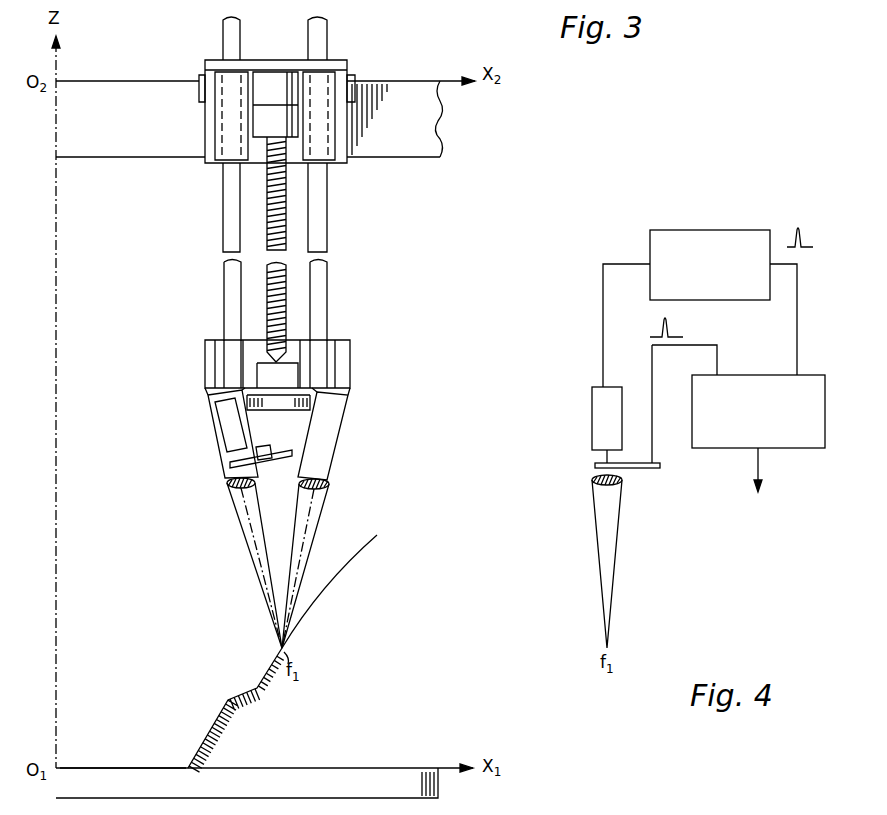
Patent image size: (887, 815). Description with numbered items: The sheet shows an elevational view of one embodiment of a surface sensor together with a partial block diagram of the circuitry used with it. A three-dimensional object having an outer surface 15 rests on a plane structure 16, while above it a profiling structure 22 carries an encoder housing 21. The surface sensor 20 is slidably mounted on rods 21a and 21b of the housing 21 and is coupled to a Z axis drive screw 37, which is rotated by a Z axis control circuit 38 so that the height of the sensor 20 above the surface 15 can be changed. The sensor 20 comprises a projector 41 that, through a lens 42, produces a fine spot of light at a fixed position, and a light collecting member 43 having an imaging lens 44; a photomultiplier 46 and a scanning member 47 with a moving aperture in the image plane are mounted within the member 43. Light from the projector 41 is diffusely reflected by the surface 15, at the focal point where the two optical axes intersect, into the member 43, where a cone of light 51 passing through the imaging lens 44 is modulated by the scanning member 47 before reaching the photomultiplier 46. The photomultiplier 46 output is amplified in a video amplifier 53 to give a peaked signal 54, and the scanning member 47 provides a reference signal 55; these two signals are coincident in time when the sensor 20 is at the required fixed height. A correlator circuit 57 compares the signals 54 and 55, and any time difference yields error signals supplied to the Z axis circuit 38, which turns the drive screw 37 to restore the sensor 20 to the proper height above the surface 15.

In FIG. 3, the outer surface 15 is at (240, 694).
In FIG. 3, the plane structure 16 is at (115, 768).
In FIG. 3, the surface sensor 20 is at (350, 346).
In FIG. 3, the encoder housing 21 is at (340, 60).
In FIG. 3, the rod 21a is at (223, 210).
In FIG. 3, the rod 21b is at (329, 210).
In FIG. 3, the profiling structure 22 is at (159, 69).
In FIG. 3, the Z axis drive screw 37 is at (286, 296).
In FIG. 3, the Z axis control circuit 38 is at (266, 88).
In FIG. 4, the Z axis control circuit 38 is at (761, 507).
In FIG. 3, the projector 41 is at (347, 412).
In FIG. 3, the lens 42 is at (328, 486).
In FIG. 3, the light collecting member 43 is at (208, 398).
In FIG. 3, the imaging lens 44 is at (234, 484).
In FIG. 4, the imaging lens 44 is at (594, 480).
In FIG. 3, the photomultiplier 46 is at (218, 432).
In FIG. 4, the photomultiplier 46 is at (610, 390).
In FIG. 3, the scanning member 47 is at (228, 464).
In FIG. 4, the scanning member 47 is at (640, 470).
In FIG. 4, the cone of light 51 is at (612, 588).
In FIG. 4, the video amplifier 53 is at (732, 230).
In FIG. 4, the signal 54 is at (801, 244).
In FIG. 4, the reference signal 55 is at (672, 336).
In FIG. 4, the correlator circuit 57 is at (806, 375).